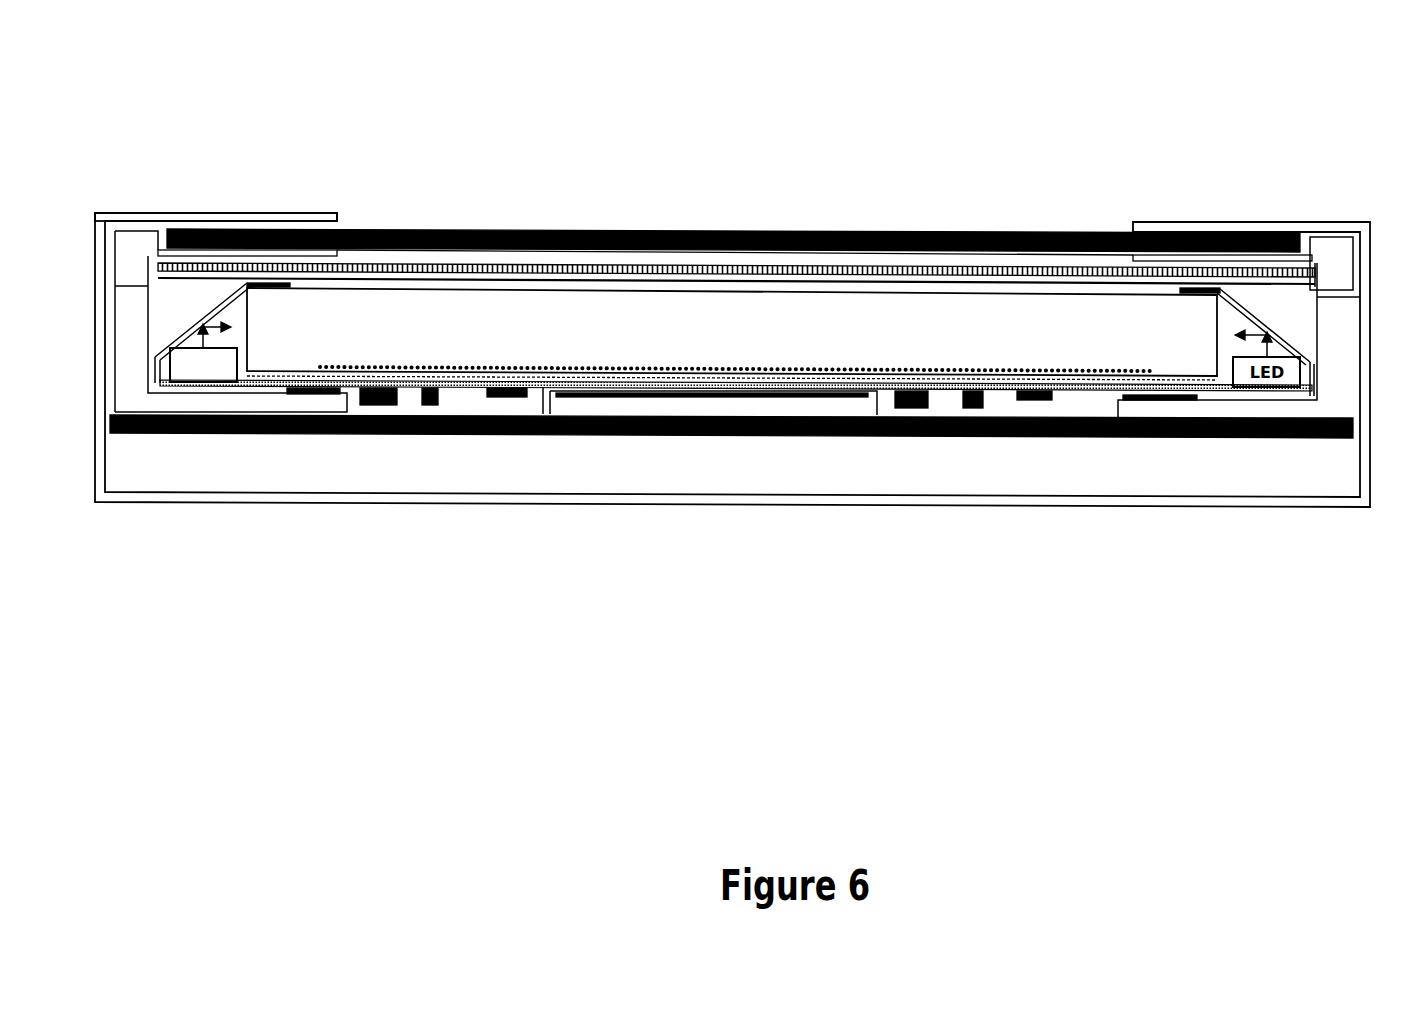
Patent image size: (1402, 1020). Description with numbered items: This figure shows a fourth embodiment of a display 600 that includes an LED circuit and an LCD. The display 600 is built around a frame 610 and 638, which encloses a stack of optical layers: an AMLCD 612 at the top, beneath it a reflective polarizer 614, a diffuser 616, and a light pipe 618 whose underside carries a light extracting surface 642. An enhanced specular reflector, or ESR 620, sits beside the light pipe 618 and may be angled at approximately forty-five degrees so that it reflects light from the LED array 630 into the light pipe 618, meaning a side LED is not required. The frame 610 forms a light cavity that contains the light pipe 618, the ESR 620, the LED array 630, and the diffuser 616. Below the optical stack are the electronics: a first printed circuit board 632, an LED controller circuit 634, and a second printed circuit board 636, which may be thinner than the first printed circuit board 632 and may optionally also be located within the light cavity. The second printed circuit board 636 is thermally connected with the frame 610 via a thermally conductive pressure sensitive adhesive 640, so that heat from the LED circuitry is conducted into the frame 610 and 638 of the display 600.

The display 600 is at (985, 105).
The frame 610 is at (260, 216).
The AMLCD 612 is at (358, 228).
The reflective polarizer 614 is at (458, 265).
The diffuser 616 is at (550, 277).
The light pipe 618 is at (645, 290).
The enhanced specular reflector 620 is at (1190, 292).
The LED array 630 is at (208, 383).
The first printed circuit board 632 is at (295, 433).
The LED controller circuit 634 is at (430, 402).
The second printed circuit board 636 is at (540, 405).
The frame 638 is at (647, 397).
The thermally conductive pressure sensitive adhesive 640 is at (808, 396).
The light extracting surface 642 is at (1083, 378).